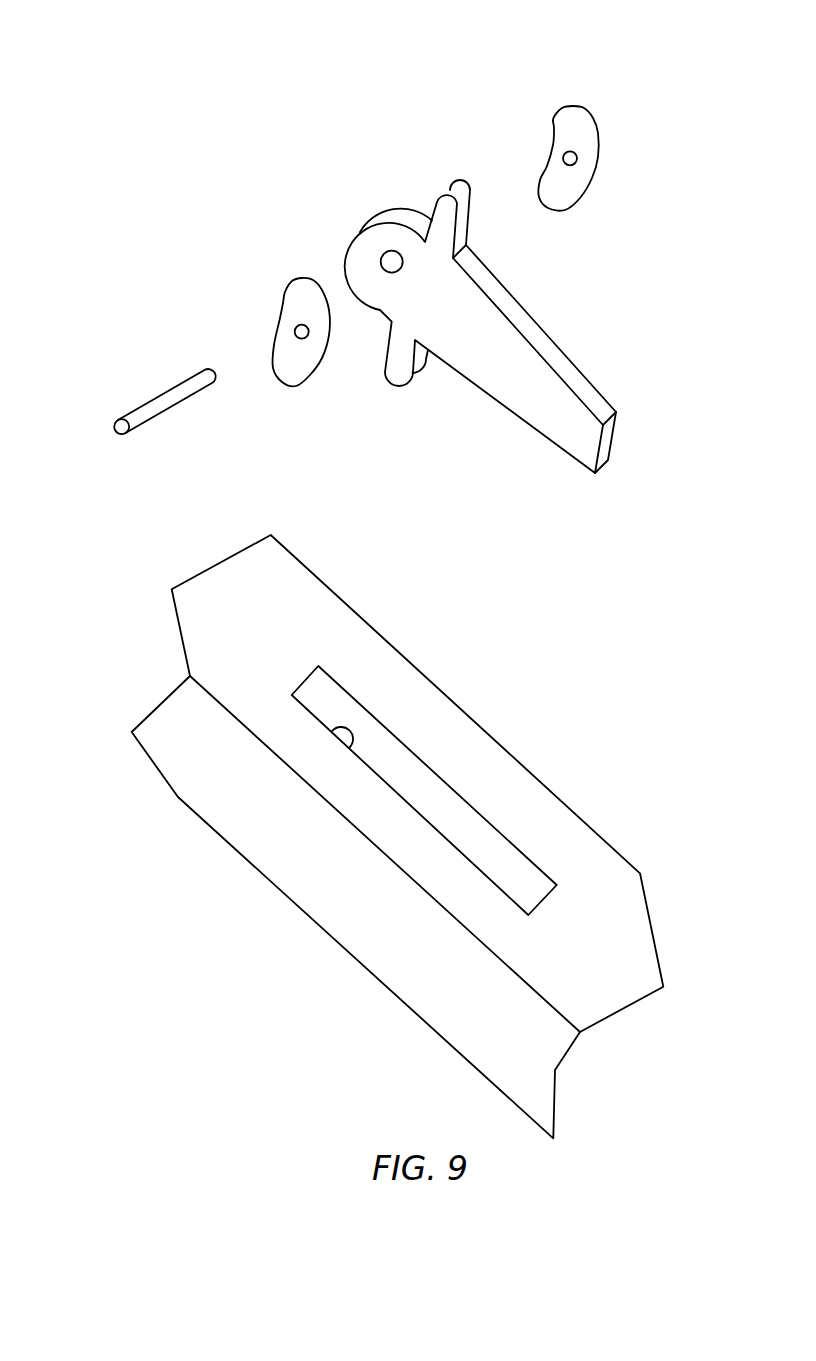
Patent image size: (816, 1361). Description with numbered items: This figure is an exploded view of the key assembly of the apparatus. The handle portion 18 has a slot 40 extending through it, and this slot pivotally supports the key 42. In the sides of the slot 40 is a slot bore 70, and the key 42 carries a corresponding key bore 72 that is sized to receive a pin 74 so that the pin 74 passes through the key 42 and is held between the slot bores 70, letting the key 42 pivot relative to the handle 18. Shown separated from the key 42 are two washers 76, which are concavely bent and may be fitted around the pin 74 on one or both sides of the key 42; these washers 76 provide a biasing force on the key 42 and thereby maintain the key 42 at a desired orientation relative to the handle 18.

The handle portion 18 is at (538, 815).
The slot 40 is at (440, 777).
The key 42 is at (540, 345).
The slot bore 70 is at (352, 727).
The key bore 72 is at (382, 257).
The pin 74 is at (165, 390).
The washers 76 is at (304, 278).